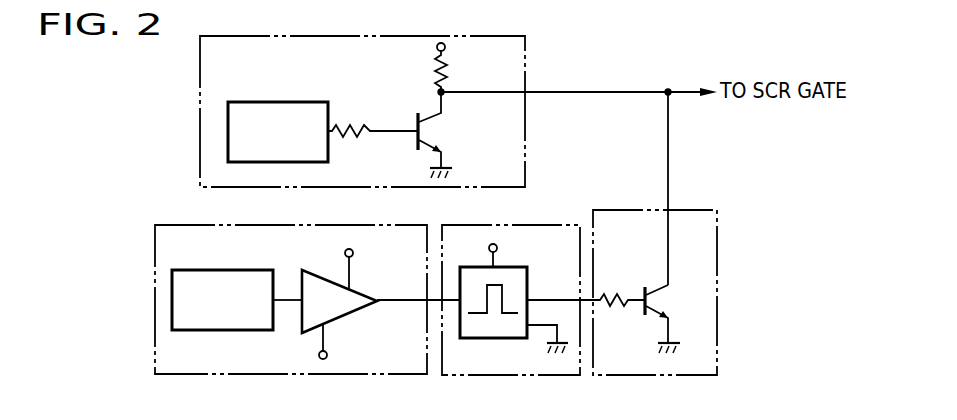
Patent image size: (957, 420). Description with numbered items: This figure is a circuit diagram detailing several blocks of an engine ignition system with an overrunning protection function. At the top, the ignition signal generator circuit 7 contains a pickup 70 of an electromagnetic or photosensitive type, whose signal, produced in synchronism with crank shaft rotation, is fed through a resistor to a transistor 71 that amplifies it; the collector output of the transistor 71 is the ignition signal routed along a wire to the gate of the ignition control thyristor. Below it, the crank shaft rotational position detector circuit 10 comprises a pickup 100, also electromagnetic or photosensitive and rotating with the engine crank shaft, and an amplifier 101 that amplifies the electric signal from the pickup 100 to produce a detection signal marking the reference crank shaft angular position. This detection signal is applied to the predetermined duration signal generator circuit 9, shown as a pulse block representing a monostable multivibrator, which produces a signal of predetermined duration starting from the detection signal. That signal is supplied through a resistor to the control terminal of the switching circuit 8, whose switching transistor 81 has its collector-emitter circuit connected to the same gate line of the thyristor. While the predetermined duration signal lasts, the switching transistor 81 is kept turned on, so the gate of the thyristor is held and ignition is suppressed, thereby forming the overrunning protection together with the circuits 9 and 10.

The ignition signal generator circuit 7 is at (527, 52).
The pickup 70 is at (285, 102).
The transistor 71 is at (430, 128).
The crank shaft rotational position detector circuit 10 is at (180, 225).
The pickup 100 is at (222, 270).
The amplifier 101 is at (315, 270).
The predetermined duration signal generator circuit 9 is at (552, 222).
The switching circuit 8 is at (627, 208).
The switching transistor 81 is at (657, 302).